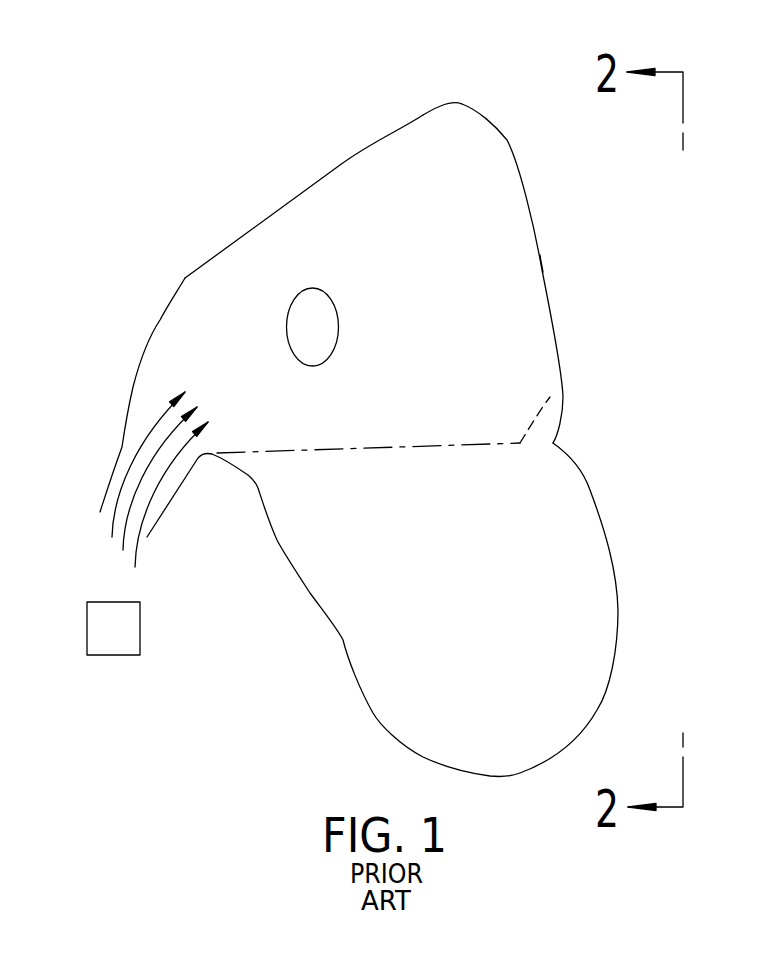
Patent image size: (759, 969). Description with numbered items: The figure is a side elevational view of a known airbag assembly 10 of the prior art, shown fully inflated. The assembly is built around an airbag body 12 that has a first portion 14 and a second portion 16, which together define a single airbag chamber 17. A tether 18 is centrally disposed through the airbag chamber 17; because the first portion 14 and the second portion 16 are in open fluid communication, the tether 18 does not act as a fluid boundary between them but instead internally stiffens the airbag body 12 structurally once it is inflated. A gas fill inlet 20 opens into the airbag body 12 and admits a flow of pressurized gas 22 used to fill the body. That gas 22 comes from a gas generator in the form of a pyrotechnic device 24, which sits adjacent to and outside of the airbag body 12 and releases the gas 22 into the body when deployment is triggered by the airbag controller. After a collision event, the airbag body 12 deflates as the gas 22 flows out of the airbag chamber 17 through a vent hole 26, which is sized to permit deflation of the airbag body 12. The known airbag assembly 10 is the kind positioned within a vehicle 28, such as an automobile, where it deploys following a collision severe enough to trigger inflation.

The airbag assembly 10 is at (380, 118).
The airbag body 12 is at (295, 193).
The first portion 14 is at (492, 173).
The second portion 16 is at (595, 605).
The airbag chamber 17 is at (405, 180).
The tether 18 is at (550, 397).
The gas fill inlet 20 is at (101, 511).
The gas 22 is at (155, 487).
The pyrotechnic device 24 is at (113, 628).
The vent hole 26 is at (313, 327).
The vehicle 28 is at (543, 263).